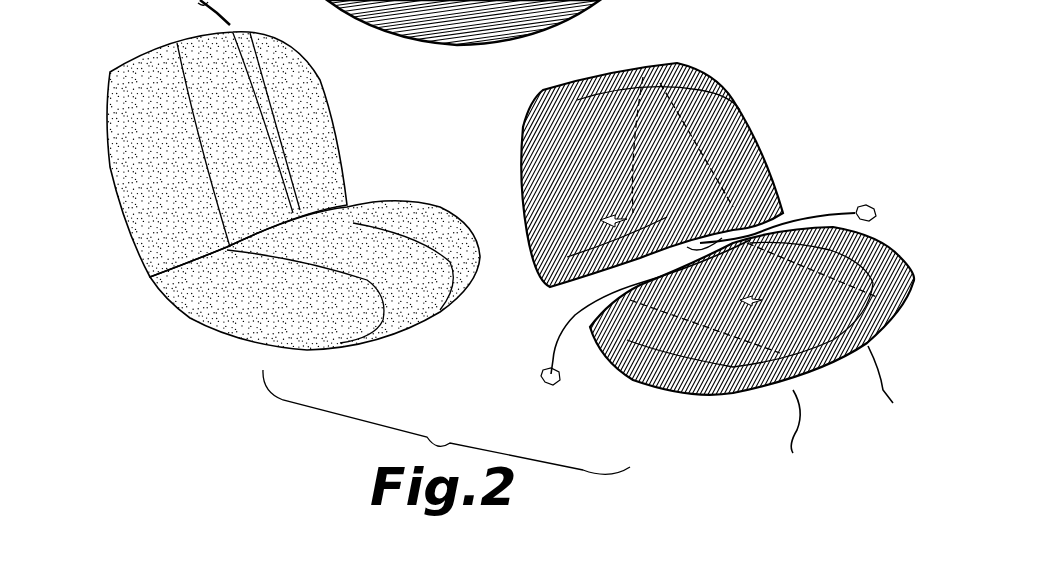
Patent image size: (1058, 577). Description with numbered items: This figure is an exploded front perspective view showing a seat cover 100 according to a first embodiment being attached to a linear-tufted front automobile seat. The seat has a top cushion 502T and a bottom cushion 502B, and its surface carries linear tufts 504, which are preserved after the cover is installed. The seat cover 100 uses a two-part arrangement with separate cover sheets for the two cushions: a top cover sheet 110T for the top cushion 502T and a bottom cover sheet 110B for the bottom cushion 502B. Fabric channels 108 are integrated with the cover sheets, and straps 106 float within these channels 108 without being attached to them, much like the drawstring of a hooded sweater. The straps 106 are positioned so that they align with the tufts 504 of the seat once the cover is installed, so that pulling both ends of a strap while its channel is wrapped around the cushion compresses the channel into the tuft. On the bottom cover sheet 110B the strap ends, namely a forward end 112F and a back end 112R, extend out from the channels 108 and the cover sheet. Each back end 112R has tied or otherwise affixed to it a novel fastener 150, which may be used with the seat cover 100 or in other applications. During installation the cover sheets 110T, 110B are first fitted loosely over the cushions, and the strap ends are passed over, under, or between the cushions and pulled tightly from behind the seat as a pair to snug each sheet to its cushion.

The top cushion 502T is at (107, 107).
The bottom cushion 502B is at (233, 337).
The linear tufts 504 is at (363, 220).
The top cover sheet 110T is at (633, 70).
The bottom cover sheet 110B is at (700, 397).
The fabric channels 108 is at (747, 110).
The seat cover 100 is at (695, 243).
The straps 106 is at (713, 309).
The back end 112R is at (738, 323).
The fastener 150 is at (749, 325).
The forward end 112F is at (873, 367).